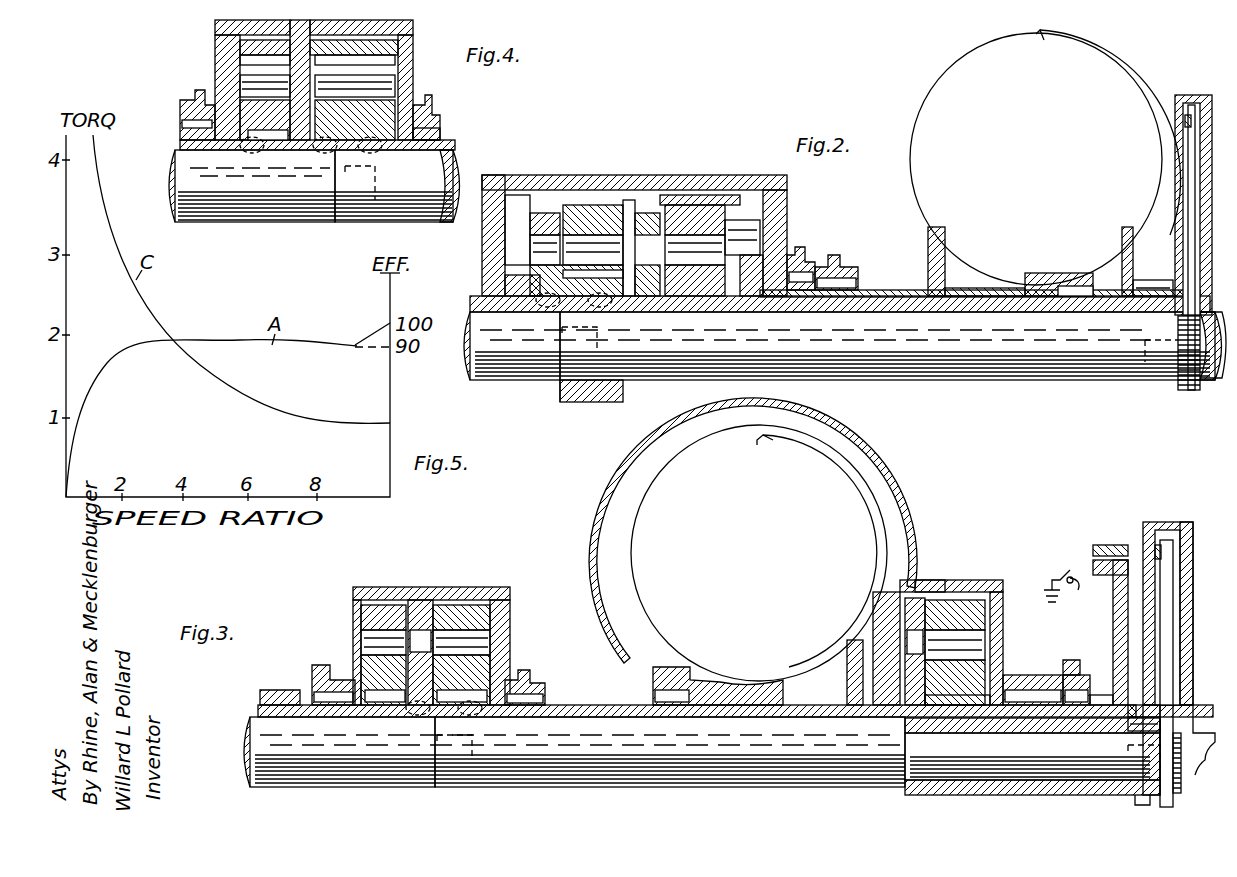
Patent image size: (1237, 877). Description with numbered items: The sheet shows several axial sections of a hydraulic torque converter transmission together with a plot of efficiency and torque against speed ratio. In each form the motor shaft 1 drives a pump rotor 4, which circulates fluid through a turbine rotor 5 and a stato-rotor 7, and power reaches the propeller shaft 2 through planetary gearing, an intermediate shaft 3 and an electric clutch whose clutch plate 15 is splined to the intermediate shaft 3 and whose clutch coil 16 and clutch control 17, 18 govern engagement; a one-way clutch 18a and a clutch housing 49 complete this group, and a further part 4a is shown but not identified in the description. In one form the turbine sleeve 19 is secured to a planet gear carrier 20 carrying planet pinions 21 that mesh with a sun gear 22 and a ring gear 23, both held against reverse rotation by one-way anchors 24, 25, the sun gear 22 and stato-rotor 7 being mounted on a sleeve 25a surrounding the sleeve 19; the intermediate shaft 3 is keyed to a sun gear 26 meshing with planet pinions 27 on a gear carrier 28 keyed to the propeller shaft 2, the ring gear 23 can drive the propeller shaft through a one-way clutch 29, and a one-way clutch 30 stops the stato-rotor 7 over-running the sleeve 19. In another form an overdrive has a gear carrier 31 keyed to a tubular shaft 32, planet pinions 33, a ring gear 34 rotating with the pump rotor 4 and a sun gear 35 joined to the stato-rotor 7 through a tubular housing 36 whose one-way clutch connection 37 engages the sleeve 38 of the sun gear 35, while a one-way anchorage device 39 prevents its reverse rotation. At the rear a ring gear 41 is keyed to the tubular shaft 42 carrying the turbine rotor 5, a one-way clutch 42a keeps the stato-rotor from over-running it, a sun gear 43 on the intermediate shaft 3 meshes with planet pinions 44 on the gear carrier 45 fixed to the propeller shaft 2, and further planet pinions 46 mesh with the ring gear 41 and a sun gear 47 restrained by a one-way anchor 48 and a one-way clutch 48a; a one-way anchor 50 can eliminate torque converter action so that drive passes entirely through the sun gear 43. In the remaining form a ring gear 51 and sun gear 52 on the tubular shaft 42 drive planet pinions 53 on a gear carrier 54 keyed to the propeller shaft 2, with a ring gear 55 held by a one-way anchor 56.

In FIG. 2, the motor shaft 1 is at (1210, 382).
In FIG. 3, the motor shaft 1 is at (1171, 740).
In FIG. 4, the propeller shaft 2 is at (273, 205).
In FIG. 2, the propeller shaft 2 is at (532, 362).
In FIG. 3, the propeller shaft 2 is at (388, 772).
In FIG. 4, the intermediate shaft 3 is at (432, 214).
In FIG. 2, the intermediate shaft 3 is at (955, 365).
In FIG. 3, the intermediate shaft 3 is at (805, 775).
In FIG. 2, the pump rotor 4 is at (948, 70).
In FIG. 3, the pump rotor 4 is at (632, 538).
In FIG. 3, the contact strip 4a is at (1112, 545).
In FIG. 2, the turbine rotor 5 is at (1145, 100).
In FIG. 3, the turbine rotor 5 is at (846, 488).
In FIG. 2, the stato-rotor 7 is at (1000, 280).
In FIG. 3, the stato-rotor 7 is at (800, 686).
In FIG. 2, the clutch plate 15 is at (1198, 95).
In FIG. 3, the clutch plate 15 is at (1170, 590).
In FIG. 2, the electric clutch coil 16 is at (1186, 104).
In FIG. 3, the electric clutch coil 16 is at (1164, 540).
In FIG. 3, the clutch control 17 is at (1073, 587).
In FIG. 3, the clutch control 18 is at (1087, 555).
In FIG. 2, the one-way clutch 18a is at (1165, 300).
In FIG. 3, the one-way clutch 18a is at (1152, 722).
In FIG. 2, the turbine sleeve 19 is at (1000, 300).
In FIG. 2, the planet gear carrier 20 is at (645, 212).
In FIG. 2, the planet pinions 21 is at (705, 205).
In FIG. 2, the sun gear 22 is at (700, 297).
In FIG. 2, the ring gear 23 is at (690, 198).
In FIG. 2, the one-way anchor 24 is at (850, 290).
In FIG. 2, the one-way anchor 25 is at (805, 272).
In FIG. 2, the sleeve 25a is at (905, 304).
In FIG. 2, the sun gear 26 is at (605, 292).
In FIG. 2, the planet pinions 27 is at (590, 205).
In FIG. 2, the gear carrier 28 is at (548, 212).
In FIG. 2, the one-way clutch 29 is at (508, 297).
In FIG. 2, the one-way clutch 30 is at (1072, 296).
In FIG. 3, the gear carrier 31 is at (922, 640).
In FIG. 3, the tubular shaft 32 is at (988, 720).
In FIG. 3, the planet pinions 33 is at (970, 624).
In FIG. 3, the ring gear 34 is at (962, 598).
In FIG. 3, the sun gear 35 is at (1042, 696).
In FIG. 3, the tubular housing 36 is at (872, 476).
In FIG. 3, the one-way clutch connection 37 is at (1070, 664).
In FIG. 3, the sleeve 38 is at (1068, 718).
In FIG. 3, the one-way anchorage device 39 is at (1076, 695).
In FIG. 3, the ring gear 41 is at (443, 598).
In FIG. 4, the tubular shaft 42 is at (440, 142).
In FIG. 3, the tubular shaft 42 is at (620, 706).
In FIG. 3, the one-way clutch 42a is at (672, 690).
In FIG. 4, the sun gear 43 is at (416, 112).
In FIG. 3, the sun gear 43 is at (480, 705).
In FIG. 4, the planet pinions 44 is at (380, 52).
In FIG. 3, the planet pinions 44 is at (470, 622).
In FIG. 4, the gear carrier 45 is at (305, 140).
In FIG. 3, the gear carrier 45 is at (422, 628).
In FIG. 3, the planet pinions 46 is at (352, 617).
In FIG. 3, the sun gear 47 is at (380, 712).
In FIG. 3, the one-way anchor 48 is at (320, 668).
In FIG. 3, the one-way clutch 48a is at (290, 690).
In FIG. 3, the clutch housing 49 is at (1185, 522).
In FIG. 4, the one-way anchor 50 is at (438, 128).
In FIG. 3, the one-way anchor 50 is at (530, 690).
In FIG. 4, the ring gear 51 is at (414, 24).
In FIG. 4, the sun gear 52 is at (262, 142).
In FIG. 4, the planet pinions 53 is at (242, 47).
In FIG. 4, the gear carrier 54 is at (246, 70).
In FIG. 4, the ring gear 55 is at (216, 26).
In FIG. 4, the one-way anchor 56 is at (180, 128).